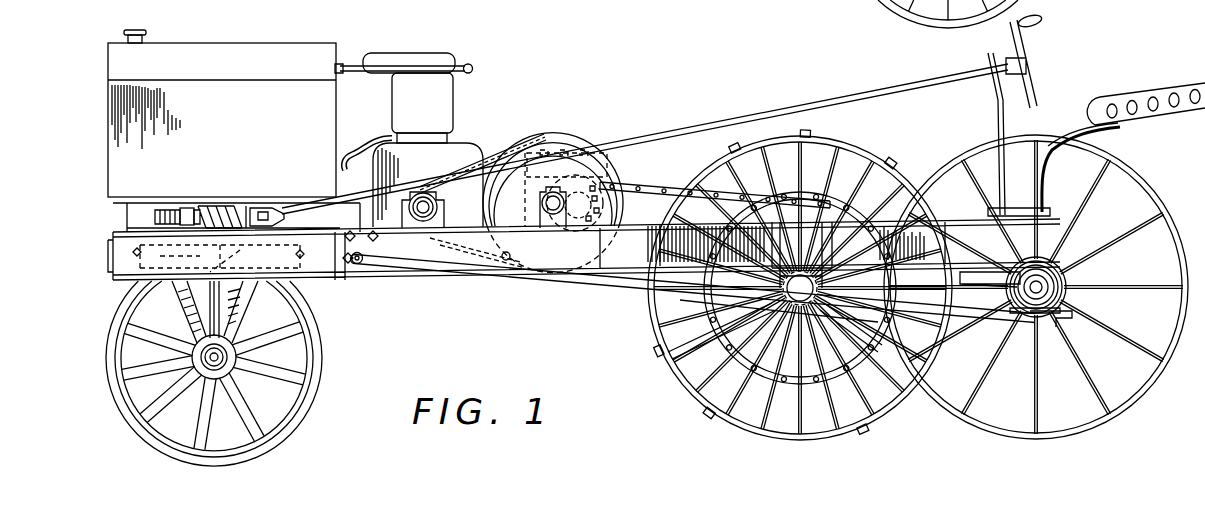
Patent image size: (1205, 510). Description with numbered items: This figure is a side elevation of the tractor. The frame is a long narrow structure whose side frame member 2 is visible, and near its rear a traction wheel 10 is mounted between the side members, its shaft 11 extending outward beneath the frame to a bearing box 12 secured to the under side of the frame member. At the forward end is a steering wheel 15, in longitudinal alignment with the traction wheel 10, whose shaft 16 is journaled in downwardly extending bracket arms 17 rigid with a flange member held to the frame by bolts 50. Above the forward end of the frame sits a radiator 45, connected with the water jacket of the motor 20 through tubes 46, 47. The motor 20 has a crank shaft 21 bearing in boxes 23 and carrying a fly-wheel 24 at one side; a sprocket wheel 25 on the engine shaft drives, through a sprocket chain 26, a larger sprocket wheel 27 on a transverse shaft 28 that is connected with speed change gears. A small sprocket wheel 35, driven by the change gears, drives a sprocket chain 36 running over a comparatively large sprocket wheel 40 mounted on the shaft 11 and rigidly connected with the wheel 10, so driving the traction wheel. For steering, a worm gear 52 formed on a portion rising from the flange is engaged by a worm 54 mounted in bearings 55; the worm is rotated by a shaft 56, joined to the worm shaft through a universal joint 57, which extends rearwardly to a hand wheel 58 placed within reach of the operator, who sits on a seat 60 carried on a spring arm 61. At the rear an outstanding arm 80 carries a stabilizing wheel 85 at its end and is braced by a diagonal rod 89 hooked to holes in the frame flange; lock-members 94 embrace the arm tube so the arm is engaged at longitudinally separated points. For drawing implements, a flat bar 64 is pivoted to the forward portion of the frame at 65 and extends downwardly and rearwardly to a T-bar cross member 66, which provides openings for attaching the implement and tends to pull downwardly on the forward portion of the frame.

The side frame member 2 is at (584, 241).
The traction wheel 10 is at (858, 154).
The shaft 11 is at (803, 277).
The bearing box 12 is at (826, 266).
The steering wheel 15 is at (230, 373).
The shaft 16 is at (240, 375).
The bracket arm 17 is at (244, 300).
The motor 20 is at (445, 103).
The crank shaft 21 is at (405, 216).
The box 23 is at (447, 215).
The fly-wheel 24 is at (370, 200).
The sprocket wheel 25 is at (446, 198).
The sprocket chain 26 is at (505, 157).
The sprocket wheel 27 is at (568, 152).
The transverse shaft 28 is at (553, 216).
The sprocket wheel 35 is at (576, 195).
The sprocket chain 36 is at (661, 184).
The sprocket wheel 40 is at (782, 288).
The radiator 45 is at (222, 113).
The tube 46 is at (420, 66).
The tube 47 is at (352, 140).
The bolts 50 is at (232, 258).
The worm gear 52 is at (160, 210).
The worm 54 is at (222, 206).
The bearings 55 is at (187, 207).
The shaft 56 is at (722, 118).
The universal joint 57 is at (268, 206).
The hand wheel 58 is at (1038, 48).
The seat 60 is at (1172, 90).
The spring arm 61 is at (1118, 130).
The flat bar 64 is at (623, 292).
The pivot 65 is at (360, 266).
The T-bar cross member 66 is at (1066, 326).
The outstanding arm 80 is at (1058, 282).
The stabilizing wheel 85 is at (1156, 386).
The rod 89 is at (506, 272).
The lock-member 94 is at (1060, 262).